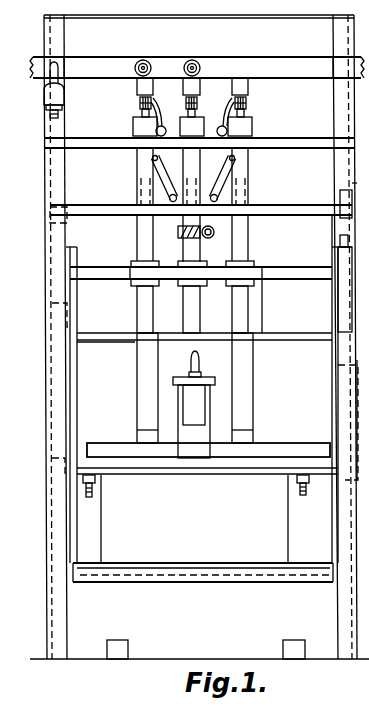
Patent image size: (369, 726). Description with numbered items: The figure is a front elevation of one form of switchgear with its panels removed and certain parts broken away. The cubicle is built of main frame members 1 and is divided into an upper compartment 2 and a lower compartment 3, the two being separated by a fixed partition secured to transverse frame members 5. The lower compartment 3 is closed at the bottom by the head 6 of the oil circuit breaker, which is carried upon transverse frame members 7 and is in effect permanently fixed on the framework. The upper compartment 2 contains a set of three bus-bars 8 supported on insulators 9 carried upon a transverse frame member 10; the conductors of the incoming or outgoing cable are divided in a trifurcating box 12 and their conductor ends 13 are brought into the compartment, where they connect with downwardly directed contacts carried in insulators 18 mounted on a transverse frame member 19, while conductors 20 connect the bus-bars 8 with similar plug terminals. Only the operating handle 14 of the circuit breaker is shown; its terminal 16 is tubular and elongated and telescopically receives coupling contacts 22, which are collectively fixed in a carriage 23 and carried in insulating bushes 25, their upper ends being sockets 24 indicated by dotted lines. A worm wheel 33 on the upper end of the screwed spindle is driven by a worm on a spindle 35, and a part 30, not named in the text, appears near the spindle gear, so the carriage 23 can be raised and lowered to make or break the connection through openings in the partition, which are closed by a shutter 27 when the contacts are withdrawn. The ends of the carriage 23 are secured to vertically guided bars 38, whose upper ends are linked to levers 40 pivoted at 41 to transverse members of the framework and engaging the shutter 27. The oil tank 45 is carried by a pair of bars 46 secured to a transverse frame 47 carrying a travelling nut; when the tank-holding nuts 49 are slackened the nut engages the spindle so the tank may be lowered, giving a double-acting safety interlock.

The main frame members 1 is at (64, 170).
The upper compartment 2 is at (112, 121).
The lower compartment 3 is at (279, 288).
The transverse frame members 5 is at (299, 213).
The head of the oil circuit breaker 6 is at (299, 453).
The transverse frame members 7 is at (85, 457).
The bus-bars 8 is at (158, 72).
The insulators 9 is at (64, 99).
The transverse frame member 10 is at (44, 104).
The trifurcating box 12 is at (232, 170).
The conductor ends 13 is at (152, 103).
The operating handle 14 is at (212, 392).
The circuit breaker terminal 16 is at (142, 386).
The insulators 18 is at (246, 127).
The transverse frame member 19 is at (312, 124).
The conductors 20 is at (240, 99).
The coupling contacts 22 is at (189, 299).
The carriage 23 is at (280, 275).
The sockets 24 is at (138, 195).
The insulating bushes 25 is at (138, 264).
The shutter 27 is at (297, 204).
The rod 30 is at (185, 224).
The worm wheel 33 is at (180, 239).
The spindle 35 is at (214, 230).
The bars 38 is at (72, 300).
The levers 40 is at (341, 293).
The pivot 41 is at (339, 410).
The oil tank 45 is at (286, 528).
The bars 46 is at (77, 357).
The transverse frame 47 is at (214, 332).
The nuts 49 is at (100, 484).